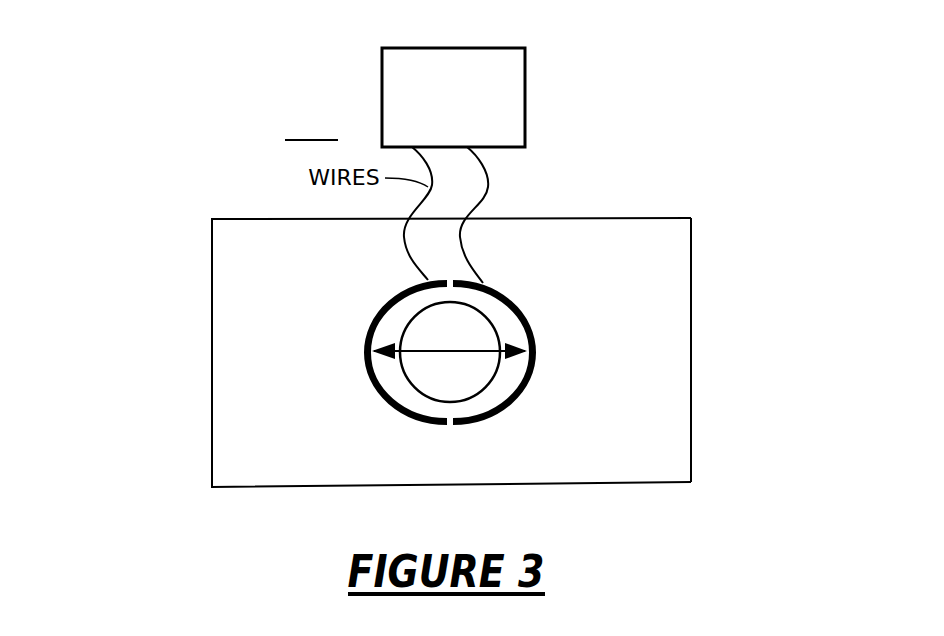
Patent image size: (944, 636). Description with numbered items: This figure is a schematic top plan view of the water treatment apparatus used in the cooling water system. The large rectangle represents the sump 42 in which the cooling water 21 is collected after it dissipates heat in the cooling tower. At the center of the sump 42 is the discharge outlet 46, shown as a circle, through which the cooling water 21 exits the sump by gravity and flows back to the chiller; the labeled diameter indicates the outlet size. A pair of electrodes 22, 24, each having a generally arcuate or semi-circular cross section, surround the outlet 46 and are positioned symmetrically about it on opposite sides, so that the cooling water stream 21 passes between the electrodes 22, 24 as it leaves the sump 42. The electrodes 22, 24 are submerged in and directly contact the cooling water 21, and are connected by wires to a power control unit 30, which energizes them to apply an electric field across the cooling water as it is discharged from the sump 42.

The cooling water 21 is at (295, 397).
The electrode 22 is at (370, 325).
The electrode 24 is at (527, 322).
The power control unit 30 is at (509, 90).
The sump 42 is at (691, 403).
The discharge outlet 46 is at (483, 333).